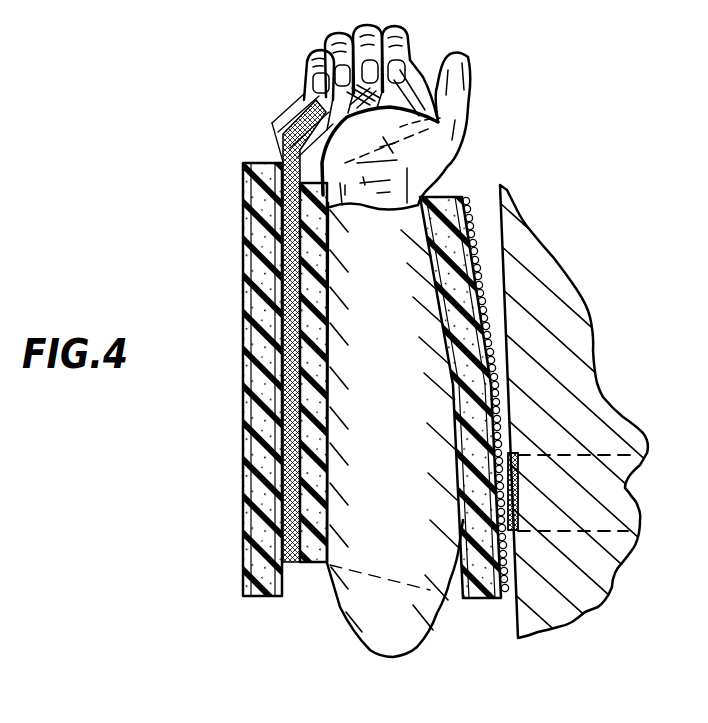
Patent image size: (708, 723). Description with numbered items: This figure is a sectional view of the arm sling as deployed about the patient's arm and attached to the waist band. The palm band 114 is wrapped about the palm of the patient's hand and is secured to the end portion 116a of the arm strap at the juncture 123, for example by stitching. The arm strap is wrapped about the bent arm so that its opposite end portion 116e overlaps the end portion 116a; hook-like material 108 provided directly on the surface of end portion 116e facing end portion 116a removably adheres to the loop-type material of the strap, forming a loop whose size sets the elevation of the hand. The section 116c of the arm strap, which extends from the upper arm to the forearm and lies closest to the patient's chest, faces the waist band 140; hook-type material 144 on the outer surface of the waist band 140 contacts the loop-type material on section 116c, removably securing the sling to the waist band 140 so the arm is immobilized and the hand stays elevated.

The palm band 114 is at (327, 110).
The juncture 123 is at (282, 137).
The end portion of arm strap 116e is at (242, 261).
The hook-like material 108 is at (288, 572).
The end portion of arm strap 116a is at (330, 357).
The section of arm strap 116c is at (481, 235).
The waist band 140 is at (583, 453).
The hook-type material 144 is at (512, 426).